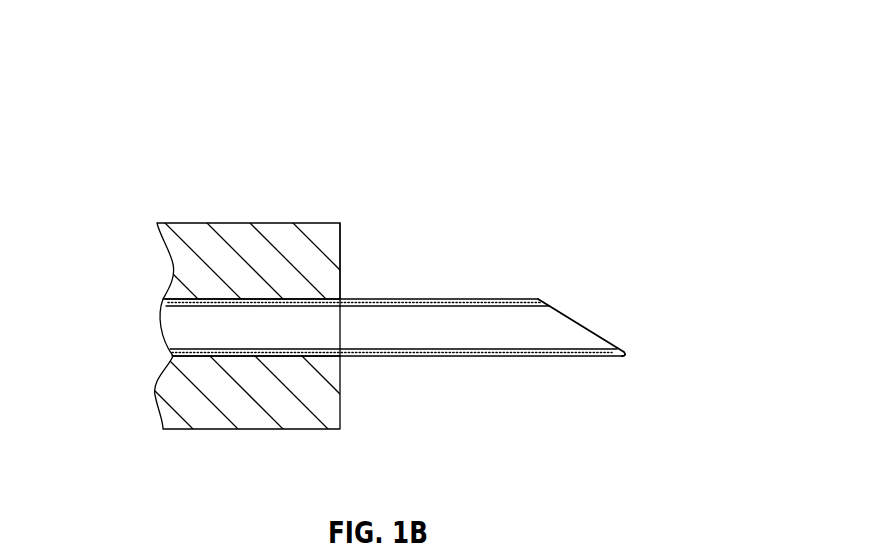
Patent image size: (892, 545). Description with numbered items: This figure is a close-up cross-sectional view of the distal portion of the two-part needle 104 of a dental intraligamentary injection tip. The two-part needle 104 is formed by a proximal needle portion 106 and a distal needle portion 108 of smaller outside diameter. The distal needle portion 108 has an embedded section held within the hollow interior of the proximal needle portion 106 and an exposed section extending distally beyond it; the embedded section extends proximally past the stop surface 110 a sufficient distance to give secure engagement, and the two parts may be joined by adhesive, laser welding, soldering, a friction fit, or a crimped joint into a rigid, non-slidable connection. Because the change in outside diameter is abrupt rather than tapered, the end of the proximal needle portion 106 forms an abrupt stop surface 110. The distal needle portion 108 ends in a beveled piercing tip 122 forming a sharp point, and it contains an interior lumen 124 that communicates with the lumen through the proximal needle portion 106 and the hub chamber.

The two-part needle 104 is at (397, 130).
The proximal needle portion 106 is at (226, 232).
The stop surface 110 is at (342, 252).
The distal needle portion 108 is at (436, 389).
The piercing tip 122 is at (577, 333).
The interior lumen 124 is at (438, 340).